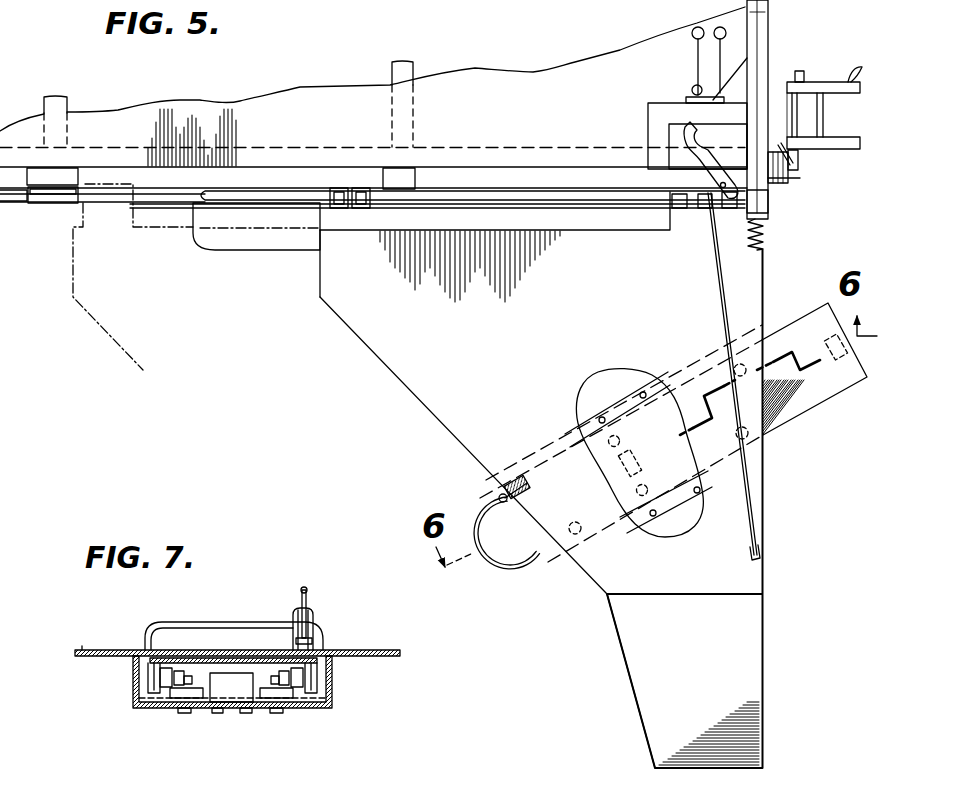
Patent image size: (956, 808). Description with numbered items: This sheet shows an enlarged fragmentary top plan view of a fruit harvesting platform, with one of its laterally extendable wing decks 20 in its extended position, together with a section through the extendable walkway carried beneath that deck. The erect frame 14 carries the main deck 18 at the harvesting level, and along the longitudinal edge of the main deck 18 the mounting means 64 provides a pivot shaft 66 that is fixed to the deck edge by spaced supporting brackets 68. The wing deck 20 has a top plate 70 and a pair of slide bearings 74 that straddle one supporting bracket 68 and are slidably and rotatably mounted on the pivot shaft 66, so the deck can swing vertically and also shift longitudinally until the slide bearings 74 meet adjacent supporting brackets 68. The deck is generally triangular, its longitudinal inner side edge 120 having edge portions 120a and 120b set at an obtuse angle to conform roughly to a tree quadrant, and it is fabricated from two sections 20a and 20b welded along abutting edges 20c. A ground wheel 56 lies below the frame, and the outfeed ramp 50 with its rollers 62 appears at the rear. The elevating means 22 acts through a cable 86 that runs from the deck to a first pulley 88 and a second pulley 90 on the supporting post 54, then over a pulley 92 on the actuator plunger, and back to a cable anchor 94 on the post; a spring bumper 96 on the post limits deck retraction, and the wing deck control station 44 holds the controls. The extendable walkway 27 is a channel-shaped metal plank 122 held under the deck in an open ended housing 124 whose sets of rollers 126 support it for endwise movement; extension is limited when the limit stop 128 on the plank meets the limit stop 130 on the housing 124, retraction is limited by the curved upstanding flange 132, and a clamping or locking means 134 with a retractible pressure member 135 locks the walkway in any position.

In FIG. 5, the erect frame 14 is at (196, 173).
In FIG. 5, the main deck 18 is at (373, 77).
In FIG. 5, the wing deck 20 is at (766, 563).
In FIG. 7, the wing deck 20 is at (82, 648).
In FIG. 5, the wing deck section 20a is at (471, 269).
In FIG. 5, the wing deck section 20b is at (709, 723).
In FIG. 5, the abutting edges 20c is at (657, 594).
In FIG. 5, the elevating means 22 is at (789, 178).
In FIG. 5, the extendable walkway 27 is at (790, 330).
In FIG. 7, the extendable walkway 27 is at (249, 652).
In FIG. 5, the wing deck control station 44 is at (682, 75).
In FIG. 5, the outfeed ramp 50 is at (841, 146).
In FIG. 5, the supporting post 54 is at (647, 120).
In FIG. 5, the ground wheel 56 is at (233, 242).
In FIG. 5, the rollers 62 is at (820, 116).
In FIG. 5, the mounting means 64 is at (472, 194).
In FIG. 5, the pivot shaft 66 is at (541, 200).
In FIG. 5, the supporting bracket 68 is at (62, 176).
In FIG. 5, the top plate 70 is at (427, 382).
In FIG. 7, the top plate 70 is at (373, 651).
In FIG. 5, the slide bearing 74 is at (365, 207).
In FIG. 5, the cable 86 is at (717, 264).
In FIG. 5, the first cable guide or pulley 88 is at (704, 182).
In FIG. 5, the second cable guide or pulley 90 is at (773, 183).
In FIG. 5, the cable guide or pulley 92 is at (793, 163).
In FIG. 5, the cable anchor 94 is at (775, 148).
In FIG. 5, the spring bumper 96 is at (764, 248).
In FIG. 5, the longitudinal inner side edge 120 is at (455, 439).
In FIG. 5, the edge portion 120a is at (372, 356).
In FIG. 5, the edge portion 120b is at (624, 647).
In FIG. 5, the metal plank 122 is at (557, 583).
In FIG. 7, the metal plank 122 is at (212, 658).
In FIG. 5, the open ended housing 124 is at (675, 505).
In FIG. 7, the open ended housing 124 is at (332, 688).
In FIG. 5, the sets of rollers 126 is at (622, 441).
In FIG. 7, the sets of rollers 126 is at (175, 699).
In FIG. 5, the limit stop 128 is at (848, 370).
In FIG. 5, the limit stop 130 is at (618, 468).
In FIG. 7, the limit stop 130 is at (233, 683).
In FIG. 5, the curved upstanding flange 132 is at (518, 575).
In FIG. 7, the curved upstanding flange 132 is at (157, 623).
In FIG. 5, the clamping or locking means 134 is at (517, 476).
In FIG. 7, the clamping or locking means 134 is at (319, 613).
In FIG. 5, the retractible pressure member 135 is at (504, 506).